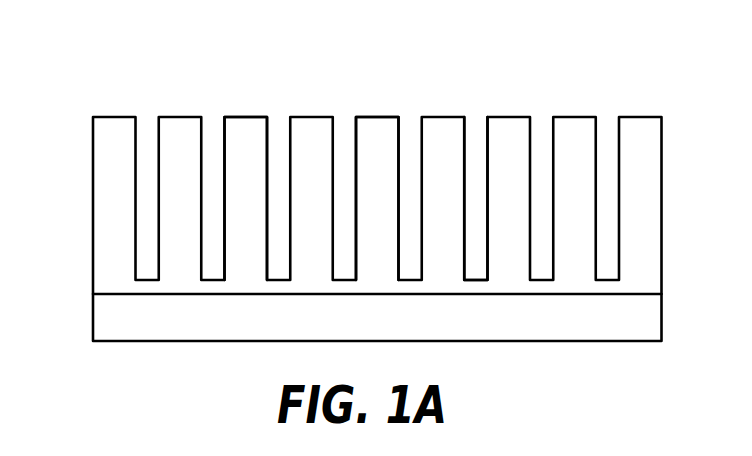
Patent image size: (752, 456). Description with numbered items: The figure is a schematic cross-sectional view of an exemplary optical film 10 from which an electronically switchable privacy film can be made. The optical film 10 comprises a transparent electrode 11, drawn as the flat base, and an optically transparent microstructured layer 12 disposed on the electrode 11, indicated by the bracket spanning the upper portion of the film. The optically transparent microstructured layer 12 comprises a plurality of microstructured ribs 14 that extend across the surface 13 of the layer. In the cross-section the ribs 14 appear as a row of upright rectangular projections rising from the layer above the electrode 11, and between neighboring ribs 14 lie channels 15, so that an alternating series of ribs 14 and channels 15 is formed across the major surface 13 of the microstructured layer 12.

The optical film 10 is at (612, 63).
The transparent electrode 11 is at (640, 316).
The optically transparent microstructured layer 12 is at (73, 120).
The surface 13 is at (246, 117).
The microstructured ribs 14 is at (381, 118).
The channels 15 is at (475, 118).